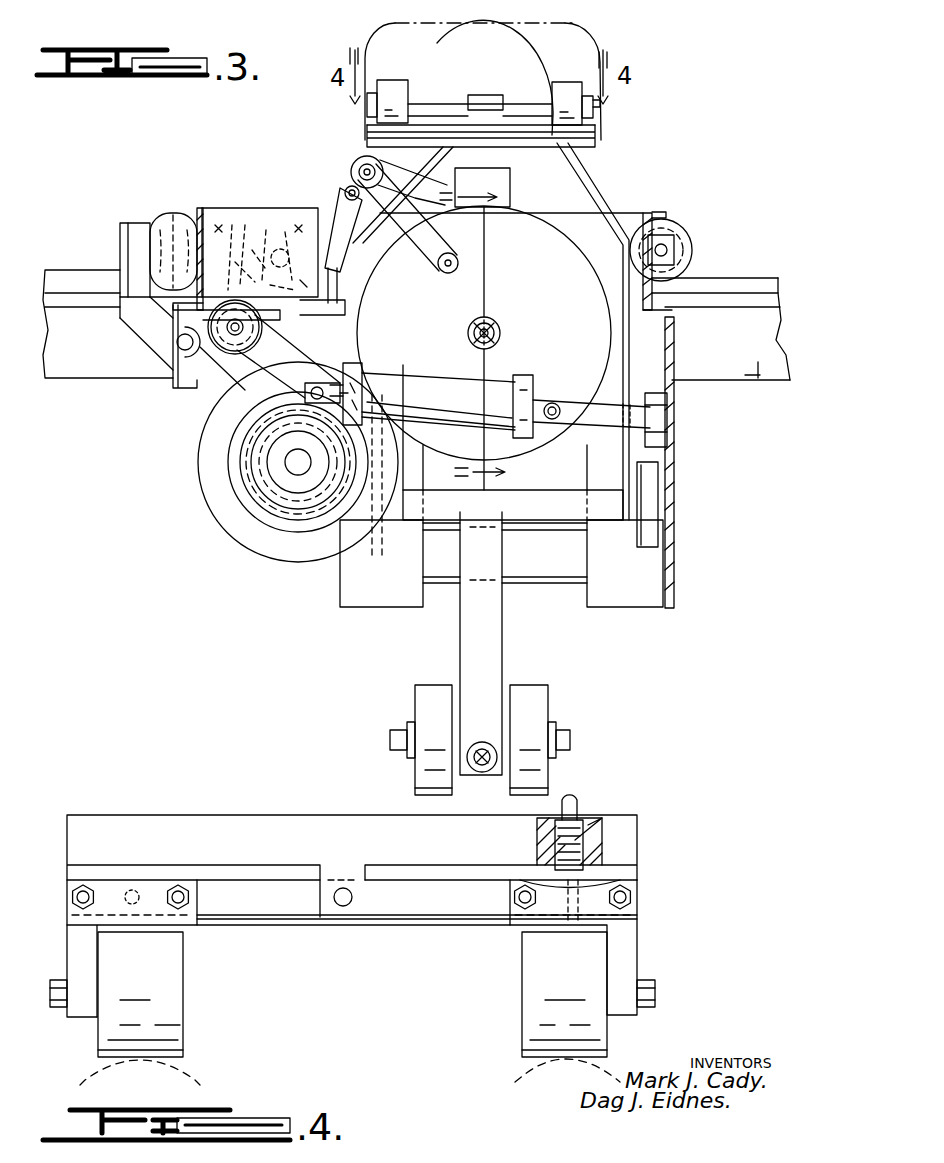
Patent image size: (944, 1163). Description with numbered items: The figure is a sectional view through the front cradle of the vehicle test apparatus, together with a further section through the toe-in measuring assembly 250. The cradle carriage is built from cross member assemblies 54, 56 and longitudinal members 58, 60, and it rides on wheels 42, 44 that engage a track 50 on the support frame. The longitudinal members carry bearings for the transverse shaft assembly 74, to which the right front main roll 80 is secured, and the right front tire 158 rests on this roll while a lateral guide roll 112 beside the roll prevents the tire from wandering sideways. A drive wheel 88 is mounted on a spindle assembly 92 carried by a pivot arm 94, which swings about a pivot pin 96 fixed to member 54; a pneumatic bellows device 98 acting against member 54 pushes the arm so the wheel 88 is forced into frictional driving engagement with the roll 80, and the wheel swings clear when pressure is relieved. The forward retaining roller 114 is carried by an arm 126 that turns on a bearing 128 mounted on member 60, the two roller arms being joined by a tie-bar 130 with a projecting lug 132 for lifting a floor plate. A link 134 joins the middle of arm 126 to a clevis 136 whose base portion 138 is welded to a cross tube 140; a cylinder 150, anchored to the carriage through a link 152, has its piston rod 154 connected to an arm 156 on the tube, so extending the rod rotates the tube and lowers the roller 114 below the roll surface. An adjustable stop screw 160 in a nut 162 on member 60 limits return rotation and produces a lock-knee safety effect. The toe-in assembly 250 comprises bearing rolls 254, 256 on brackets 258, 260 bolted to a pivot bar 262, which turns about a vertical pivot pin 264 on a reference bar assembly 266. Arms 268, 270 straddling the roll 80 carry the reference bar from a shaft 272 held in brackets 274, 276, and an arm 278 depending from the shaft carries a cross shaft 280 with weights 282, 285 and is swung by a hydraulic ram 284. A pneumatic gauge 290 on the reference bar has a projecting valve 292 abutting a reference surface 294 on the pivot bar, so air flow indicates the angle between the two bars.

In FIG. 3, the wheel 42 is at (228, 206).
In FIG. 3, the wheel 44 is at (690, 245).
In FIG. 3, the track 50 is at (730, 278).
In FIG. 3, the cross member assembly 54 is at (196, 208).
In FIG. 3, the cross member assembly 56 is at (660, 214).
In FIG. 3, the longitudinal member 58 is at (757, 382).
In FIG. 3, the longitudinal member 60 is at (241, 314).
In FIG. 3, the transverse shaft assembly 74 is at (506, 321).
In FIG. 3, the right front main roll 80 is at (580, 326).
In FIG. 3, the wheel 88 is at (238, 522).
In FIG. 3, the axle or spindle assembly 92 is at (286, 470).
In FIG. 3, the pivot arm 94 is at (212, 418).
In FIG. 3, the pivot pin 96 is at (177, 343).
In FIG. 3, the device 98 is at (175, 215).
In FIG. 3, the lateral guide roll 112 is at (512, 200).
In FIG. 3, the forward retaining roller 114 is at (430, 198).
In FIG. 3, the arm 126 is at (400, 287).
In FIG. 3, the bearing 128 is at (486, 262).
In FIG. 3, the tie-bar 130 is at (352, 162).
In FIG. 3, the projecting lug 132 is at (343, 188).
In FIG. 3, the link 134 is at (408, 224).
In FIG. 3, the clevis 136 is at (330, 258).
In FIG. 3, the base portion 138 is at (323, 363).
In FIG. 3, the cross shaft or tube 140 is at (198, 388).
In FIG. 3, the cylinder 150 is at (415, 372).
In FIG. 3, the link 152 is at (555, 398).
In FIG. 3, the piston rod 154 is at (348, 372).
In FIG. 3, the arm 156 is at (258, 398).
In FIG. 3, the right front tire 158 is at (628, 52).
In FIG. 3, the adjustable stop screw 160 is at (248, 222).
In FIG. 3, the nut 162 is at (280, 228).
In FIG. 3, the toe-in measuring assembly 250 is at (613, 134).
In FIG. 4, the toe-in measuring assembly 250 is at (658, 908).
In FIG. 3, the toe-in bearing roll 254 is at (392, 82).
In FIG. 4, the toe-in bearing roll 254 is at (185, 1000).
In FIG. 3, the toe-in bearing roll 256 is at (582, 86).
In FIG. 4, the toe-in bearing roll 256 is at (600, 1030).
In FIG. 4, the bracket 258 is at (88, 955).
In FIG. 4, the bracket 260 is at (625, 963).
In FIG. 3, the pivot bar 262 is at (486, 112).
In FIG. 4, the pivot bar 262 is at (300, 908).
In FIG. 4, the vertical pivot pin 264 is at (350, 905).
In FIG. 3, the reference bar assembly 266 is at (440, 105).
In FIG. 4, the reference bar assembly 266 is at (344, 818).
In FIG. 3, the arm 268 is at (404, 222).
In FIG. 3, the arm 270 is at (600, 190).
In FIG. 3, the shaft 272 is at (534, 522).
In FIG. 3, the bracket 274 is at (365, 560).
In FIG. 3, the bracket 276 is at (648, 548).
In FIG. 3, the arm 278 is at (490, 645).
In FIG. 3, the cross shaft 280 is at (572, 742).
In FIG. 3, the weight 282 is at (428, 688).
In FIG. 3, the hydraulic ram 284 is at (484, 786).
In FIG. 3, the weight 285 is at (532, 688).
In FIG. 4, the pneumatic gauging mechanism 290 is at (592, 818).
In FIG. 4, the projecting valve 292 is at (604, 868).
In FIG. 4, the reference surface 294 is at (540, 875).